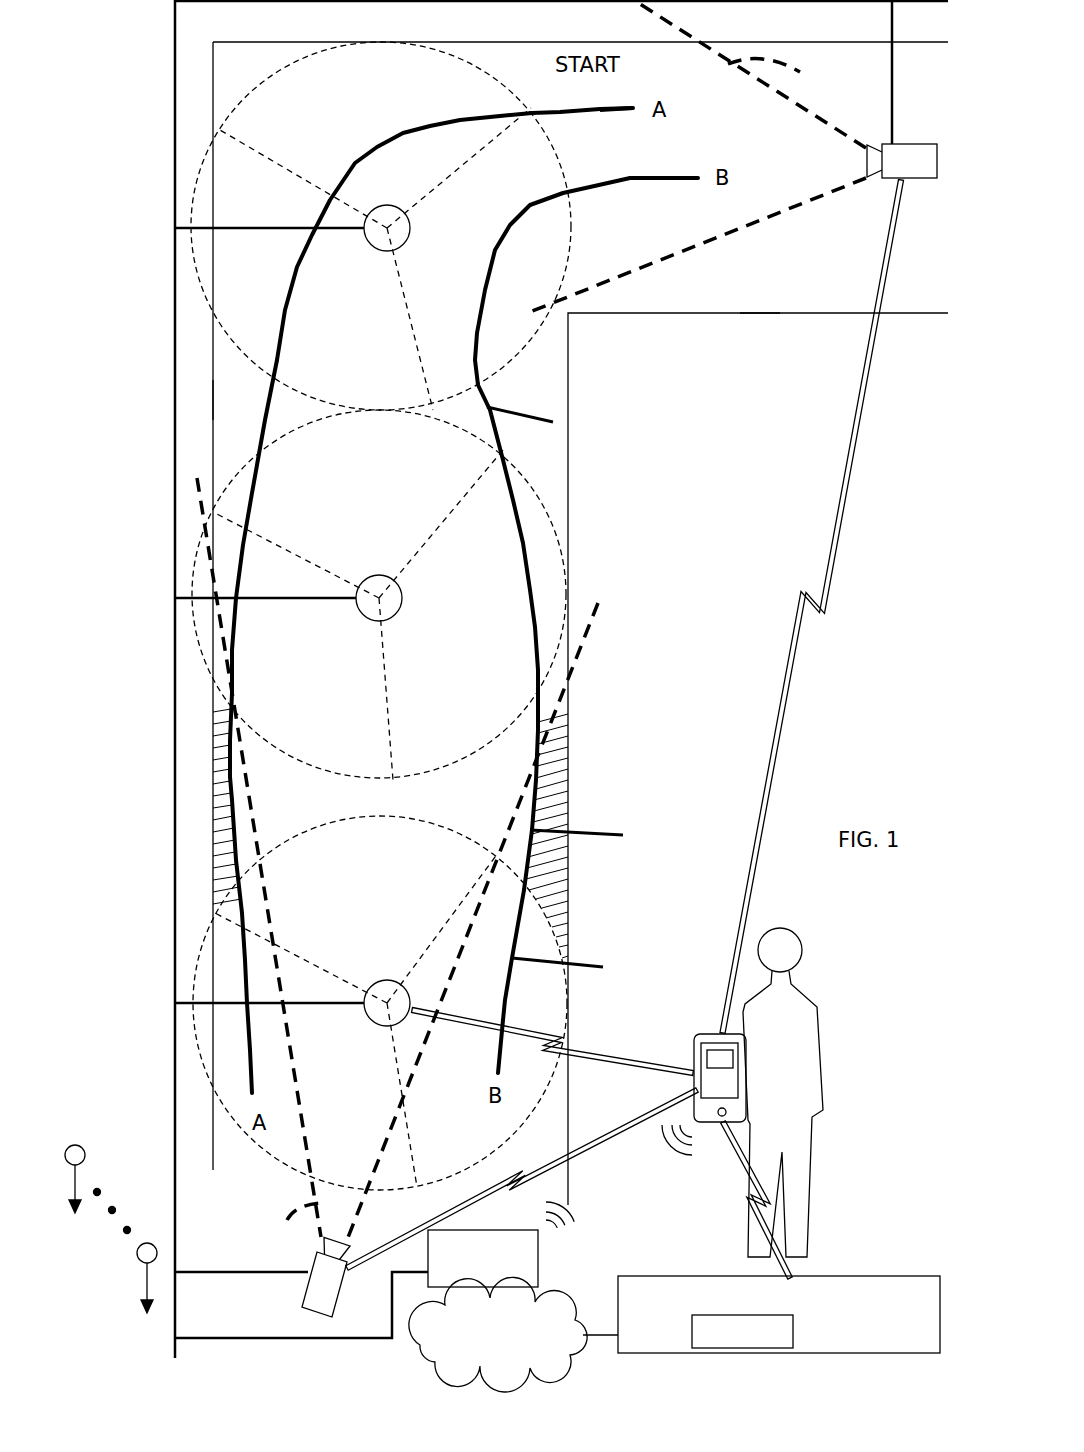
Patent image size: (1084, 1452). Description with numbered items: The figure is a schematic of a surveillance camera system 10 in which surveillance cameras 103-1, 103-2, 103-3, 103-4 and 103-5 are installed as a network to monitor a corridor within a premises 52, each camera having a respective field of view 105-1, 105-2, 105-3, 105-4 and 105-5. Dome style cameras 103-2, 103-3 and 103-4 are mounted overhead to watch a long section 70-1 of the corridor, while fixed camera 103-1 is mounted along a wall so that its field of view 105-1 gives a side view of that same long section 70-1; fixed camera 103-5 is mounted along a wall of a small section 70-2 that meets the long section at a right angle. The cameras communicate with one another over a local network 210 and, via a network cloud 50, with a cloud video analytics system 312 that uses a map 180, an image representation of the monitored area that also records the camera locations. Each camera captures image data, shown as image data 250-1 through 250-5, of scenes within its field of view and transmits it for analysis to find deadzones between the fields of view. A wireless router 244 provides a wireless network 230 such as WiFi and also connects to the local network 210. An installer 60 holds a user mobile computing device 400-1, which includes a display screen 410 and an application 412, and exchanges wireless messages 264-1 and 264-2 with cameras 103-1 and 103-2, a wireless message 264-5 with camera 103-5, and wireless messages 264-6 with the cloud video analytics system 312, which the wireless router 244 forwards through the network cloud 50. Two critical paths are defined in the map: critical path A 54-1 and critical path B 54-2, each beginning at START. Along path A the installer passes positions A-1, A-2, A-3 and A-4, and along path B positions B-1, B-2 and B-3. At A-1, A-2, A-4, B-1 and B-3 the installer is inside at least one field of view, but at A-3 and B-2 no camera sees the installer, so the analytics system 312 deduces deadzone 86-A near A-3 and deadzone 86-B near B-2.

The surveillance camera system 10 is at (130, 107).
The local network 210 is at (173, 1102).
The long section of the corridor 70-1 is at (187, 395).
The small section of the corridor 70-2 is at (760, 278).
The premises 52 is at (685, 313).
The field of view of camera 103-1 105-1 is at (284, 1232).
The field of view of camera 103-2 105-2 is at (567, 1117).
The field of view of camera 103-3 105-3 is at (572, 512).
The field of view of camera 103-4 105-4 is at (437, 43).
The field of view of camera 103-5 105-5 is at (698, 158).
The surveillance camera 103-1 is at (302, 1288).
The surveillance camera 103-2 is at (387, 980).
The surveillance camera 103-3 is at (403, 598).
The surveillance camera 103-4 is at (385, 205).
The surveillance camera 103-5 is at (878, 178).
The position along path A A-1 is at (303, 272).
The position along path A A-2 is at (252, 492).
The position along path A A-3 is at (237, 825).
The position along path A A-4 is at (250, 1053).
The position along path B B-1 is at (553, 422).
The position along path B B-2 is at (623, 835).
The position along path B B-3 is at (603, 967).
The critical path A 54-1 is at (597, 115).
The critical path B 54-2 is at (590, 187).
The deadzone 86-A is at (218, 803).
The deadzone 86-B is at (548, 783).
The image data 250-1 is at (87, 1163).
The image data 250-5 is at (147, 1278).
The wireless message 264-1 is at (505, 1172).
The wireless message 264-2 is at (575, 1043).
The wireless message 264-5 is at (803, 622).
The wireless message 264-6 is at (772, 1197).
The user mobile computing device 400-1 is at (721, 1014).
The display screen 410 is at (723, 1077).
The application 412 is at (733, 1057).
The installer 60 is at (820, 1017).
The wireless network 230 is at (619, 1186).
The wireless router 244 is at (483, 1258).
The network cloud 50 is at (512, 1334).
The cloud video analytics system 312 is at (779, 1314).
The map 180 is at (742, 1331).